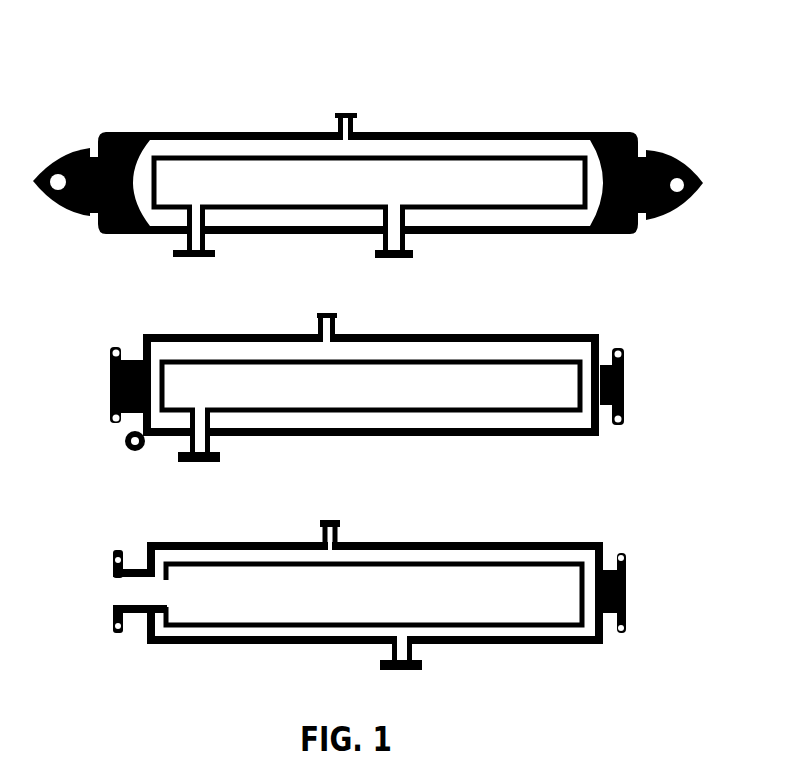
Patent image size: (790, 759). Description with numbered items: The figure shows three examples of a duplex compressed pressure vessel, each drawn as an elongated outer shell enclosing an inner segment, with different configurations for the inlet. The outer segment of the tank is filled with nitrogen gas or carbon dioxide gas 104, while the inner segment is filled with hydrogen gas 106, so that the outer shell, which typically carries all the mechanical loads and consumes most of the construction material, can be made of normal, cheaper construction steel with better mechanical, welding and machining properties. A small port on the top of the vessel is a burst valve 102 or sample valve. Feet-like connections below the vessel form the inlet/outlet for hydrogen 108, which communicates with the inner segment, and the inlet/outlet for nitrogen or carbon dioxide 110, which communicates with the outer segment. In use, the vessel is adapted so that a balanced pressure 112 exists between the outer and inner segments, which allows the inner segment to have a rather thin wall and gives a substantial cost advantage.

The burst valve 102 is at (342, 112).
The nitrogen or carbon dioxide gas 104 is at (435, 150).
The hydrogen gas 106 is at (542, 178).
The hydrogen inlet/outlet 108 is at (194, 247).
The nitrogen or carbon dioxide inlet/outlet 110 is at (390, 248).
The balanced pressure 112 is at (513, 557).